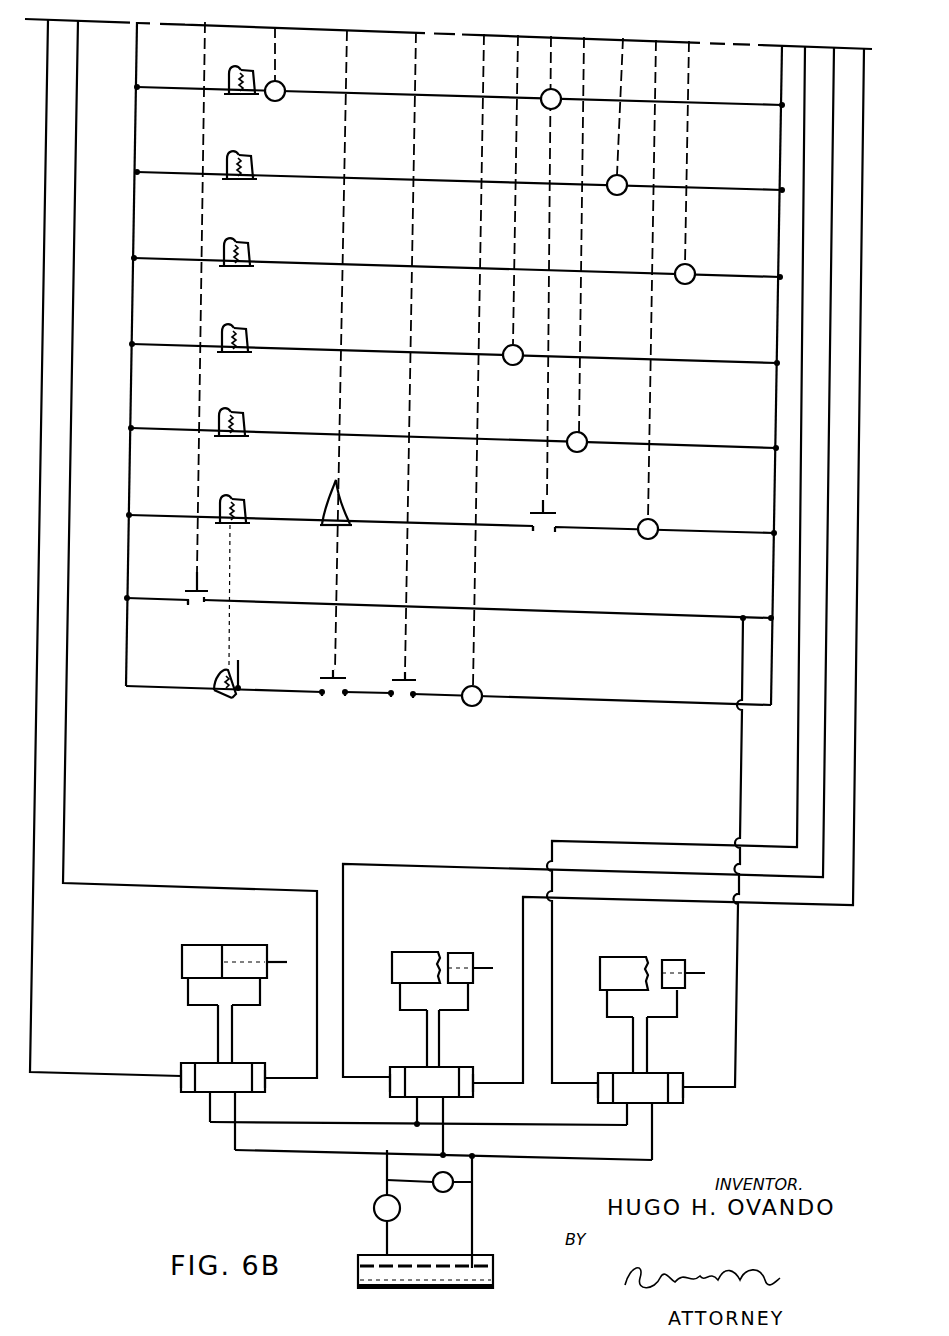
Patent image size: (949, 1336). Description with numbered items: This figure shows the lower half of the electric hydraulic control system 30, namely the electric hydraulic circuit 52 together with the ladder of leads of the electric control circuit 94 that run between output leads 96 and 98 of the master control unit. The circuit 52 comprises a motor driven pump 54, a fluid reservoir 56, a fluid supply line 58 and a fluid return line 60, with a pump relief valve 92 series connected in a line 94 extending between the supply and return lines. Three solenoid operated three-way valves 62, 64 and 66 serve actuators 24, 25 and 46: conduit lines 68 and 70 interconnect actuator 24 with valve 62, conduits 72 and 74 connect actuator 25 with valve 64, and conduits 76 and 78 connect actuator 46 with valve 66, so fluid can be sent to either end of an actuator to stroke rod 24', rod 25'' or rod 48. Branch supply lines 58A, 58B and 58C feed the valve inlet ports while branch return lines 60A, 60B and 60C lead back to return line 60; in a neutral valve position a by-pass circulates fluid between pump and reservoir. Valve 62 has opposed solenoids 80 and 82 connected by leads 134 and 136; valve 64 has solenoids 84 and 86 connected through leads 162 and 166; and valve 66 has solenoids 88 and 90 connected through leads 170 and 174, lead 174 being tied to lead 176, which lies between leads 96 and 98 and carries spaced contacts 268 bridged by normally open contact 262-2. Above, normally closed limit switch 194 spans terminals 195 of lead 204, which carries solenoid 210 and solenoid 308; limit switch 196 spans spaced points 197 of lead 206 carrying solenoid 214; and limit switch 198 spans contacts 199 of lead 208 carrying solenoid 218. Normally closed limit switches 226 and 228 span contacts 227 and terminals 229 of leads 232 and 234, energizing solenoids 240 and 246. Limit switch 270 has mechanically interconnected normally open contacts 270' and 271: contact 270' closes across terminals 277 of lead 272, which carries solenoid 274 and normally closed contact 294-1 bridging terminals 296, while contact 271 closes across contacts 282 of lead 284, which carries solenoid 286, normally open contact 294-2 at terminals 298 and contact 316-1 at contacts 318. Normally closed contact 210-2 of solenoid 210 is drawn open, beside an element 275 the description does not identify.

The electric hydraulic control system 30 is at (124, 212).
The electric control circuit 94 is at (386, 1172).
The output lead 96 is at (127, 553).
The output lead 98 is at (772, 560).
The lead 134 is at (40, 806).
The lead 136 is at (72, 773).
The lead 162 is at (823, 820).
The lead 166 is at (856, 906).
The lead 170 is at (660, 841).
The lead 174 is at (738, 740).
The lead 176 is at (683, 615).
The normally closed limit switch 194 is at (250, 97).
The terminals 195 is at (236, 70).
The limit switch 196 is at (250, 181).
The spaced points 197 is at (250, 157).
The limit switch 198 is at (250, 269).
The spaced contacts 199 is at (248, 241).
The lead 204 is at (712, 103).
The lead 206 is at (749, 190).
The lead 208 is at (360, 266).
The solenoid 210 is at (545, 90).
The normally closed contact 210-2 is at (548, 513).
The solenoid 214 is at (618, 196).
The solenoid 218 is at (695, 282).
The normally closed limit switch 226 is at (248, 354).
The spaced contacts 227 is at (244, 322).
The normally closed limit switch 228 is at (246, 438).
The spaced terminals 229 is at (241, 408).
The lead 232 is at (750, 360).
The lead 234 is at (757, 412).
The solenoid 240 is at (510, 366).
The solenoid 246 is at (580, 432).
The normally open contact 262-2 is at (212, 590).
The spaced contacts 268 is at (200, 600).
The limit switch 270 is at (263, 595).
The normally open contact 270' is at (259, 526).
The normally open contact 271 is at (226, 697).
The lead 272 is at (737, 529).
The solenoid 274 is at (650, 518).
The switch contact 275 is at (535, 530).
The spaced terminals 277 is at (250, 501).
The bridgeable contacts 282 is at (236, 667).
The lead 284 is at (640, 703).
The solenoid 286 is at (480, 703).
The normally closed contact 294-1 is at (340, 530).
The normally open contact 294-2 is at (336, 668).
The spaced terminals 296 is at (332, 492).
The bridgeable terminals 298 is at (323, 695).
The solenoid 308 is at (283, 98).
The normally open contact 316-1 is at (405, 672).
The spaced contacts 318 is at (392, 697).
The actuator 24 is at (224, 939).
The rod 24' is at (257, 932).
The actuator 25 is at (416, 943).
The rod 25'' is at (471, 944).
The actuator 46 is at (672, 958).
The rod 48 is at (700, 975).
The electric hydraulic circuit 52 is at (318, 1180).
The motor driven pump 54 is at (400, 1216).
The fluid reservoir 56 is at (437, 1290).
The fluid supply line 58 is at (328, 1122).
The branch fluid supply line 58A is at (208, 1112).
The branch fluid supply line 58B is at (412, 1124).
The branch fluid supply line 58C is at (630, 1125).
The fluid return line 60 is at (580, 1162).
The branch return line 60A is at (236, 1150).
The branch return line 60B is at (446, 1150).
The branch return line 60C is at (655, 1130).
The solenoid operated three-way valve 62 is at (246, 1065).
The solenoid operated three-way valve 64 is at (452, 1068).
The solenoid operated three-way valve 66 is at (664, 1073).
The conduit line 68 is at (216, 1040).
The conduit line 70 is at (234, 1040).
The conduit 72 is at (427, 1042).
The conduit 74 is at (439, 1040).
The conduit 76 is at (633, 1042).
The conduit 78 is at (648, 1042).
The solenoid 80 is at (182, 1094).
The solenoid 82 is at (258, 1093).
The solenoid 84 is at (392, 1100).
The solenoid 86 is at (472, 1098).
The solenoid 88 is at (600, 1095).
The solenoid 90 is at (684, 1098).
The pump relief valve 92 is at (460, 1188).